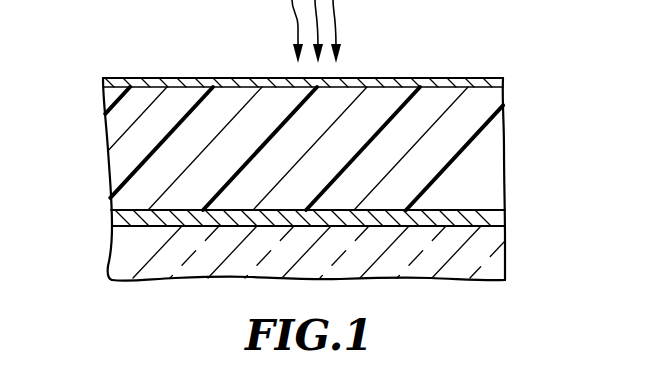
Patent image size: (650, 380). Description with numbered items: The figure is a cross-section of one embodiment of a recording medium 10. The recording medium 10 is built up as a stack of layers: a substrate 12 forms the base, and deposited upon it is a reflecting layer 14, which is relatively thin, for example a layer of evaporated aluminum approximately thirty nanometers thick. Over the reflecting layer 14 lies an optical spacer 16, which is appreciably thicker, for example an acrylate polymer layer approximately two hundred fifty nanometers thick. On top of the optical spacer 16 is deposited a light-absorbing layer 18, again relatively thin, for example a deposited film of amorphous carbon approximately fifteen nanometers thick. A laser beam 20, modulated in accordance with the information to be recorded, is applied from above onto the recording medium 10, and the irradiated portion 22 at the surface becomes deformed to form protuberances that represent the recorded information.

The recording medium 10 is at (92, 74).
The substrate 12 is at (497, 262).
The reflecting layer 14 is at (505, 211).
The optical spacer 16 is at (505, 146).
The light-absorbing layer 18 is at (503, 78).
The laser beam 20 is at (322, 19).
The irradiated portion 22 is at (338, 79).